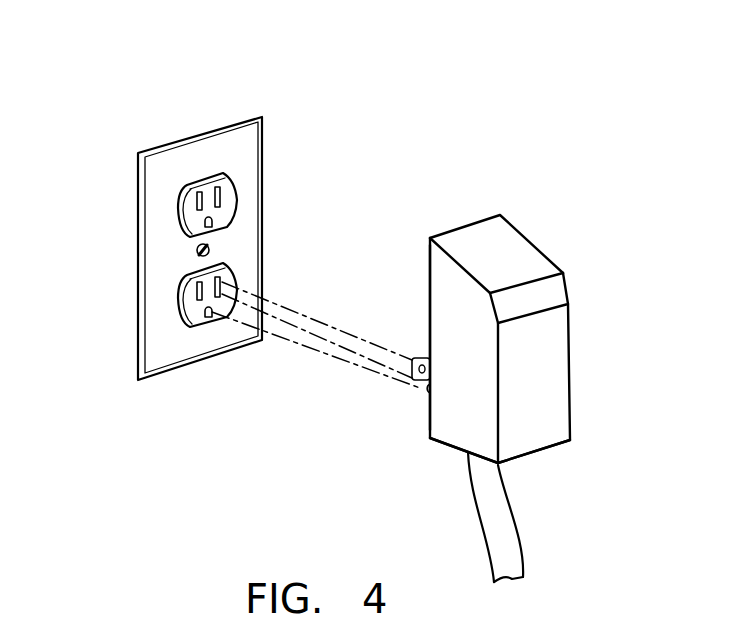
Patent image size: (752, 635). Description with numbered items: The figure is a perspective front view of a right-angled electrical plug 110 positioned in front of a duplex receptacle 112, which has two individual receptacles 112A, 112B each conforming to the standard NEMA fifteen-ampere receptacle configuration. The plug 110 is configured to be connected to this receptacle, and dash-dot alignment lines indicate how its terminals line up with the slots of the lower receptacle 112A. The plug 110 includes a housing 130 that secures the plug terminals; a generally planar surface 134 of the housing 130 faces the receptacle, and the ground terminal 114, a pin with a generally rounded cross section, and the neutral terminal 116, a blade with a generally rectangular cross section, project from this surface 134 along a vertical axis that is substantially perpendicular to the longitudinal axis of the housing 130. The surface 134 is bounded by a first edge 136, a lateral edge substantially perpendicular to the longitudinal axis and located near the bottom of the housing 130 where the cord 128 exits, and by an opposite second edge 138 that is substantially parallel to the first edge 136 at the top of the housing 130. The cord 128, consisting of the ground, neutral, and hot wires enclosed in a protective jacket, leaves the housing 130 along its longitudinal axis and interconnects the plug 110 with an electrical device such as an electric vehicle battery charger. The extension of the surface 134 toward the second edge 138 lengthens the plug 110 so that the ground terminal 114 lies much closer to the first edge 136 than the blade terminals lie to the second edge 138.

The right-angled electrical plug 110 is at (517, 198).
The duplex receptacle 112 is at (211, 110).
The individual receptacle 112A is at (188, 305).
The individual receptacle 112B is at (188, 222).
The ground terminal 114 is at (422, 391).
The neutral terminal 116 is at (413, 357).
The cord 128 is at (512, 538).
The housing 130 is at (537, 258).
The planar surface 134 is at (430, 253).
The first edge 136 is at (452, 437).
The second edge 138 is at (477, 224).